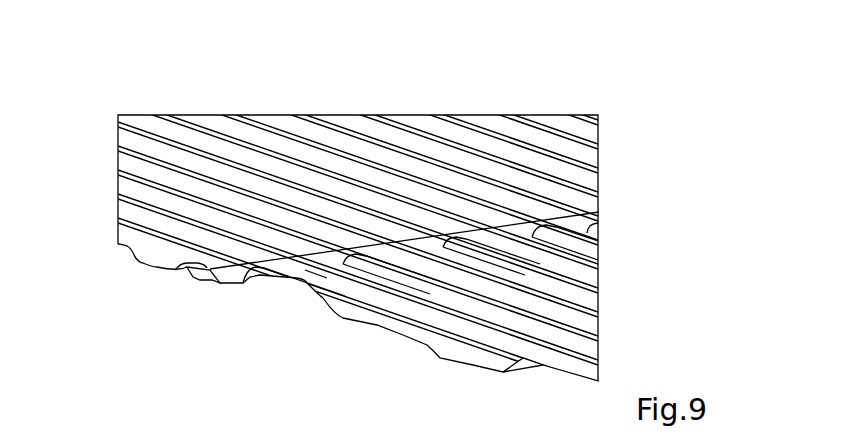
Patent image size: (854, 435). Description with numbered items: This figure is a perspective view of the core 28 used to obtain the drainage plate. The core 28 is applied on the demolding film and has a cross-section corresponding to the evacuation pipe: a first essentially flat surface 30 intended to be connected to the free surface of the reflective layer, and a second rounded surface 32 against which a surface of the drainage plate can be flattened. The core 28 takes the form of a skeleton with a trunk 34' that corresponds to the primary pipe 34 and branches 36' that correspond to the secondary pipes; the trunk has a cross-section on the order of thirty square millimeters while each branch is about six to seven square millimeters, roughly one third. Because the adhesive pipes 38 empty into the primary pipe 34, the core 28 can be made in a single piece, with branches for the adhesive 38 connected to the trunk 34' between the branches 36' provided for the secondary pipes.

The core 28 is at (484, 236).
The first essentially flat surface 30 is at (197, 280).
The second rounded surface 32 is at (183, 273).
The primary pipe 34 is at (409, 350).
The trunk 34' is at (415, 149).
The branches 36' is at (311, 248).
The adhesive pipes 38 is at (292, 258).